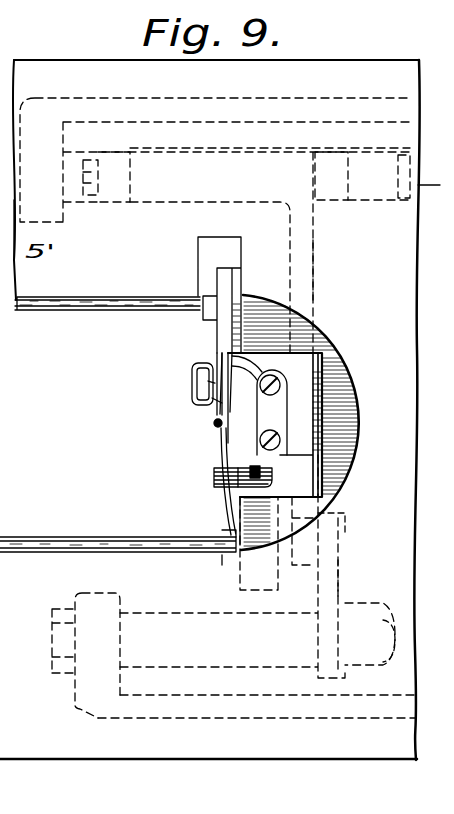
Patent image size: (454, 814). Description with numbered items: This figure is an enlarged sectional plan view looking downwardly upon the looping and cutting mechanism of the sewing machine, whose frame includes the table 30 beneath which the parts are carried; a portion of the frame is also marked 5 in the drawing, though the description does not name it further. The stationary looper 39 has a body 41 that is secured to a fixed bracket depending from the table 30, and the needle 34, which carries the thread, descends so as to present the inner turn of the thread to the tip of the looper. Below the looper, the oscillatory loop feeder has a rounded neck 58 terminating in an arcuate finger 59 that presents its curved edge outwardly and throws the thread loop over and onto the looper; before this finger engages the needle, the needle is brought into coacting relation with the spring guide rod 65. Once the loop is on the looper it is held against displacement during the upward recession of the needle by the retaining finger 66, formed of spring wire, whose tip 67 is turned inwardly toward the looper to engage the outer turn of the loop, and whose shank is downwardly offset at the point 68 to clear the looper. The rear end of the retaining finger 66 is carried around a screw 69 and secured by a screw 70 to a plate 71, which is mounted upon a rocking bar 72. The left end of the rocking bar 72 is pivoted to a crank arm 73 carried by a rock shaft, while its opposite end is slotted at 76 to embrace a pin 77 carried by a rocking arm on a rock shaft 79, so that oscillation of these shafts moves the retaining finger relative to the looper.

The table 30 is at (362, 58).
The crank arm 73 is at (335, 150).
The rocking bar 72 is at (311, 278).
The frame 5 is at (56, 246).
The body of the looper 41 is at (222, 285).
The retaining finger 66 is at (200, 366).
The offset point 68 is at (193, 366).
The tip of the retaining finger 67 is at (209, 386).
The stationary looper 39 is at (221, 402).
The needle 34 is at (215, 426).
The arcuate finger 59 is at (256, 467).
The neck 58 is at (216, 486).
The spring guide rod 65 is at (226, 497).
The screw 69 is at (250, 402).
The plate 71 is at (300, 402).
The screw 70 is at (287, 455).
The pin 77 is at (322, 537).
The slot 76 is at (337, 587).
The rock shaft 79 is at (394, 638).